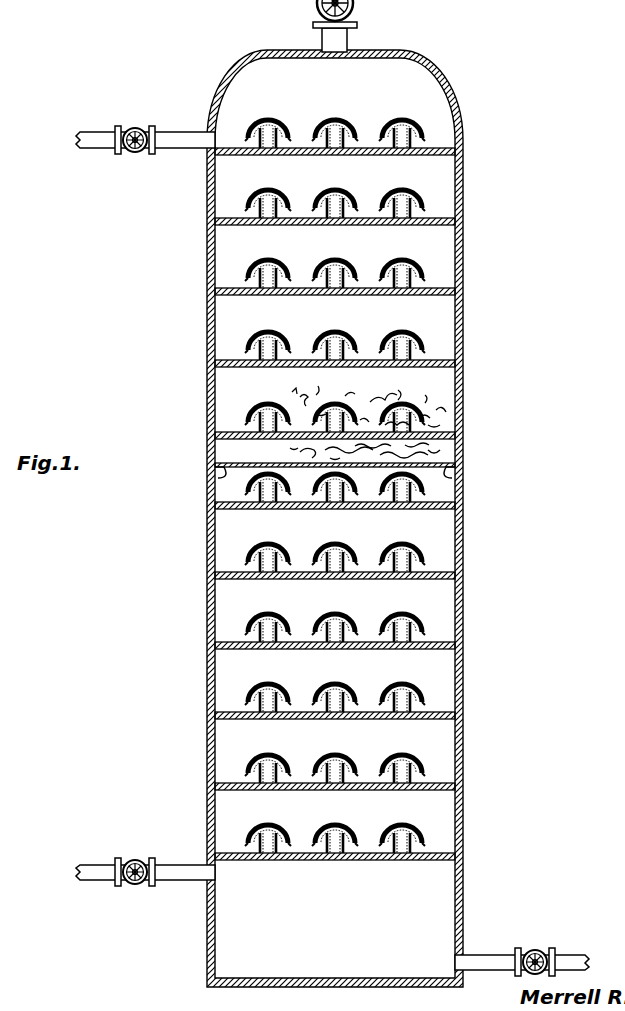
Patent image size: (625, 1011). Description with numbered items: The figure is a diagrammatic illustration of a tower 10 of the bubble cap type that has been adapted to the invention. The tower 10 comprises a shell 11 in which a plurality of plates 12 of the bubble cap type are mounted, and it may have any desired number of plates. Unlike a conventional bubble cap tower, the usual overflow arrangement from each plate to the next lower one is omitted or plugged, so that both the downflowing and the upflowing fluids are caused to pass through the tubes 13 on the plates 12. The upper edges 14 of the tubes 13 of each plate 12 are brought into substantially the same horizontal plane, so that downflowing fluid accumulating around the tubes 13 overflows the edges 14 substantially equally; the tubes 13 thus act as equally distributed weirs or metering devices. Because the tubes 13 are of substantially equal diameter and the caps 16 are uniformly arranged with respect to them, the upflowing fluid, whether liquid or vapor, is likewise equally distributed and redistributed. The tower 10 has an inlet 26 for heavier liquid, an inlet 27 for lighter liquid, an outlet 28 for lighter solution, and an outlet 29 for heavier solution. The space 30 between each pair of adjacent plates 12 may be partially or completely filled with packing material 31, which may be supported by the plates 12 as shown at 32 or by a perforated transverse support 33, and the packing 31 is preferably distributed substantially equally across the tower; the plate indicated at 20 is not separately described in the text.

The tower 10 is at (468, 640).
The shell 11 is at (462, 549).
The plates 12 is at (455, 153).
The tubes 13 is at (415, 148).
The upper edges 14 is at (390, 131).
The caps 16 is at (318, 133).
The plate 20 is at (230, 447).
The inlet for heavier liquid 26 is at (187, 140).
The inlet for lighter liquid 27 is at (206, 880).
The outlet for lighter solution 28 is at (342, 43).
The outlet for heavier solution 29 is at (471, 962).
The space 30 is at (232, 393).
The packing material 31 is at (445, 453).
The packing supported by plates 32 is at (440, 419).
The perforated transverse support 33 is at (455, 472).